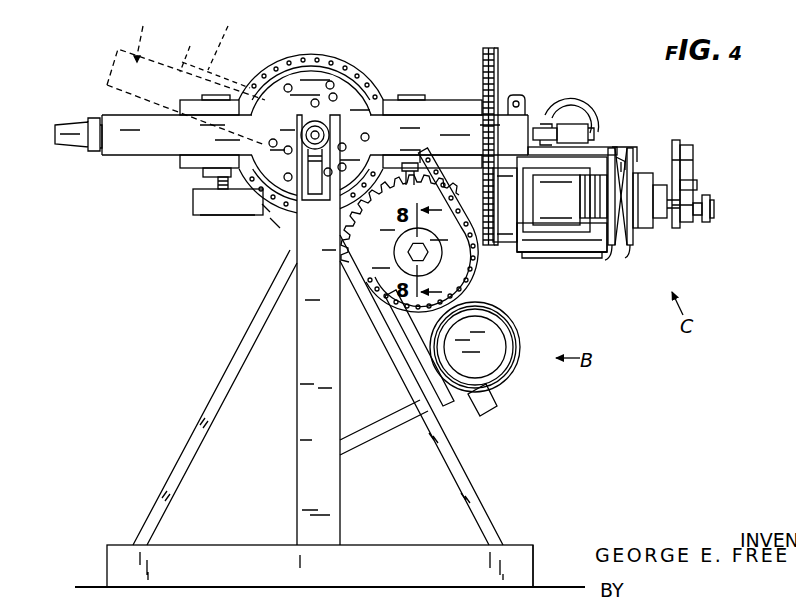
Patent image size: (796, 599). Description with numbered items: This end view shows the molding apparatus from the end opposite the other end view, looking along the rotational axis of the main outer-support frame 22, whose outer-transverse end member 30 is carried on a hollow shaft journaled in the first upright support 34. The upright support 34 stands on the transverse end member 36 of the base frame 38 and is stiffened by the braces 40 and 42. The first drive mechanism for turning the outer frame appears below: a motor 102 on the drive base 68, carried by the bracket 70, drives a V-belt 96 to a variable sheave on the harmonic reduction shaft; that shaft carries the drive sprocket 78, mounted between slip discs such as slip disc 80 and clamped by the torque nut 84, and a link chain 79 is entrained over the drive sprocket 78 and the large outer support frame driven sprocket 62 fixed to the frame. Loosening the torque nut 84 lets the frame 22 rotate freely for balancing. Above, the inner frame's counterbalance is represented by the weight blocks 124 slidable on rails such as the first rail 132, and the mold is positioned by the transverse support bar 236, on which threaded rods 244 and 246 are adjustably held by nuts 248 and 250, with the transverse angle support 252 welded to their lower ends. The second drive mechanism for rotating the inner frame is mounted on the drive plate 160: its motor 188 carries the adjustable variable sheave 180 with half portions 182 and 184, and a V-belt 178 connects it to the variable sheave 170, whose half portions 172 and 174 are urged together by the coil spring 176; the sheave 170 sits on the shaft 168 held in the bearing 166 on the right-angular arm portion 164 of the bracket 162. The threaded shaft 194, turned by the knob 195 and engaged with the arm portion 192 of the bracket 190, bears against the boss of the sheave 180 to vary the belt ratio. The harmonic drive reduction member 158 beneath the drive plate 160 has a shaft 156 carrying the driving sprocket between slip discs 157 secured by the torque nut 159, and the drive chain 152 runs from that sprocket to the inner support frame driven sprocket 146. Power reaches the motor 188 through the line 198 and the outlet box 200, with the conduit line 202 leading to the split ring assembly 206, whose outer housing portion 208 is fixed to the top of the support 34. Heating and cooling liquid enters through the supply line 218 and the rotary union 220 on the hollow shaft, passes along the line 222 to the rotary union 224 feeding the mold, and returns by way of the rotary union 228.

The main outer-support frame 22 is at (100, 192).
The outer-transverse end member 30 is at (113, 208).
The first upright support 34 is at (297, 420).
The transverse end member 36 is at (232, 556).
The base frame 38 is at (530, 543).
The brace 40 is at (462, 481).
The brace 42 is at (181, 484).
The outer support frame driven sprocket 62 is at (300, 70).
The drive base 68 is at (440, 421).
The bracket 70 is at (420, 386).
The drive sprocket 78 is at (484, 270).
The link chain 79 is at (353, 60).
The slip disc 80 is at (405, 258).
The torque nut 84 is at (410, 262).
The V-belt 96 is at (488, 300).
The motor 102 is at (506, 337).
The weight blocks 124 is at (223, 95).
The first rail 132 is at (150, 178).
The inner support frame driven sprocket 146 is at (496, 58).
The drive chain 152 is at (499, 66).
The shaft 156 is at (528, 200).
The slip discs 157 is at (530, 253).
The harmonic drive reduction member 158 is at (567, 253).
The torque nut 159 is at (470, 200).
The drive plate 160 is at (616, 147).
The transversely extending bracket 162 is at (645, 168).
The right-angular arm portion 164 is at (691, 162).
The bearing 166 is at (672, 220).
The shaft 168 is at (648, 230).
The variable sheave 170 is at (623, 160).
The half portion 172 is at (627, 157).
The half portion 174 is at (623, 162).
The coil spring 176 is at (611, 248).
The V-belt 178 is at (657, 175).
The adjustable variable sheave 180 is at (630, 250).
The half portion 182 is at (636, 250).
The half portion 184 is at (622, 248).
The motor 188 is at (557, 259).
The transversely extending bracket 190 is at (688, 160).
The right-angular arm portion 192 is at (688, 165).
The threaded shaft 194 is at (705, 197).
The knob 195 is at (713, 216).
The line 198 is at (566, 104).
The outlet box 200 is at (522, 96).
The conduit line 202 is at (450, 104).
The split ring assembly 206 is at (319, 64).
The outer housing portion 208 is at (260, 205).
The supply line 218 is at (273, 225).
The rotary union 220 is at (323, 138).
The line 222 is at (522, 147).
The rotary union 224 is at (569, 148).
The rotary union 228 is at (75, 122).
The support bar 236 is at (147, 165).
The threaded rod 244 is at (435, 156).
The threaded rod 246 is at (212, 217).
The nut 248 is at (412, 162).
The nut 250 is at (216, 191).
The transverse angle support 252 is at (222, 218).